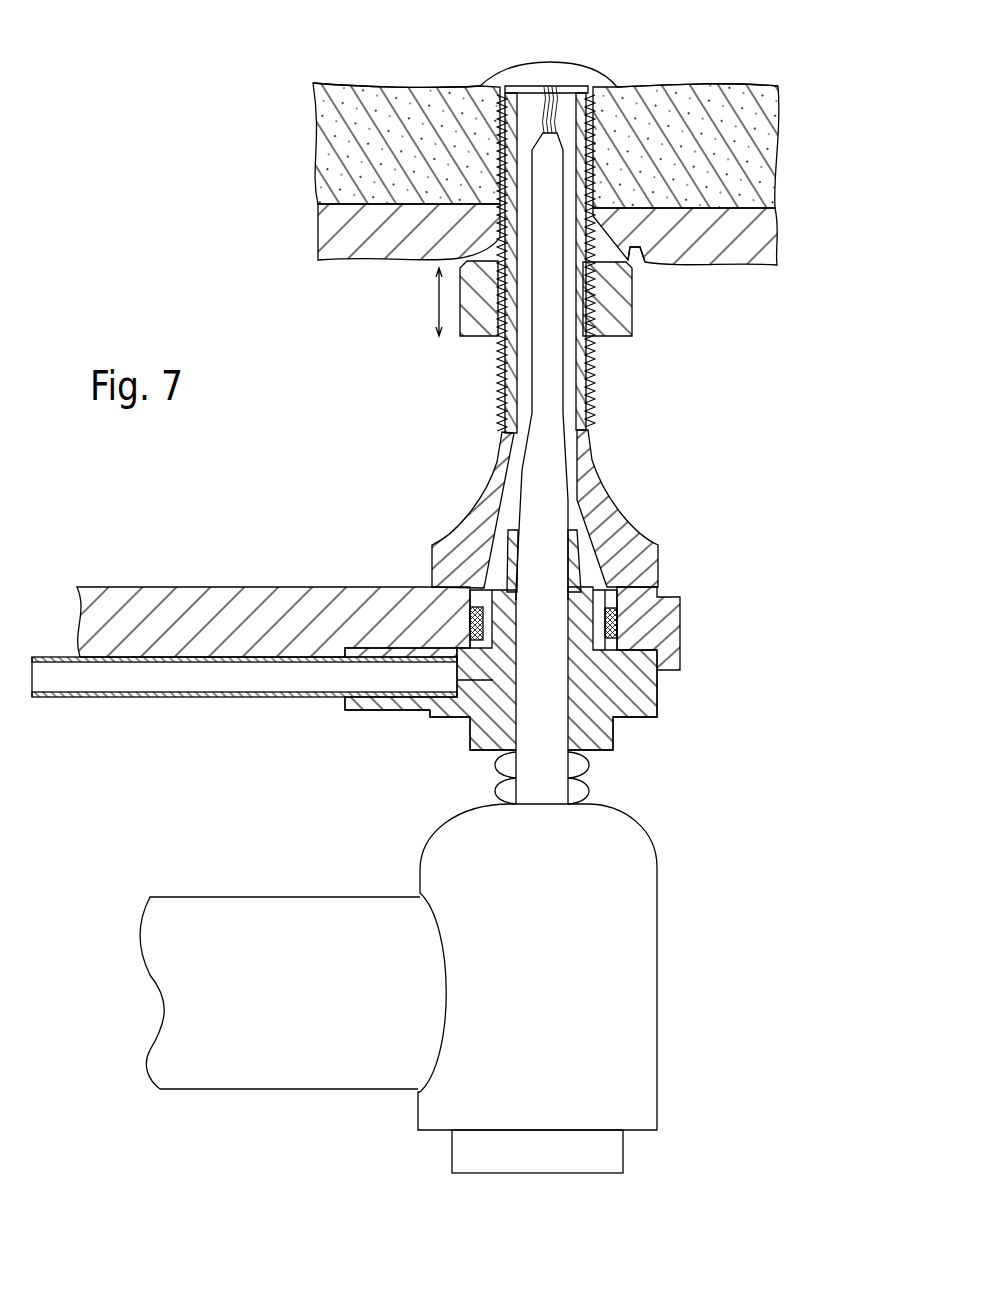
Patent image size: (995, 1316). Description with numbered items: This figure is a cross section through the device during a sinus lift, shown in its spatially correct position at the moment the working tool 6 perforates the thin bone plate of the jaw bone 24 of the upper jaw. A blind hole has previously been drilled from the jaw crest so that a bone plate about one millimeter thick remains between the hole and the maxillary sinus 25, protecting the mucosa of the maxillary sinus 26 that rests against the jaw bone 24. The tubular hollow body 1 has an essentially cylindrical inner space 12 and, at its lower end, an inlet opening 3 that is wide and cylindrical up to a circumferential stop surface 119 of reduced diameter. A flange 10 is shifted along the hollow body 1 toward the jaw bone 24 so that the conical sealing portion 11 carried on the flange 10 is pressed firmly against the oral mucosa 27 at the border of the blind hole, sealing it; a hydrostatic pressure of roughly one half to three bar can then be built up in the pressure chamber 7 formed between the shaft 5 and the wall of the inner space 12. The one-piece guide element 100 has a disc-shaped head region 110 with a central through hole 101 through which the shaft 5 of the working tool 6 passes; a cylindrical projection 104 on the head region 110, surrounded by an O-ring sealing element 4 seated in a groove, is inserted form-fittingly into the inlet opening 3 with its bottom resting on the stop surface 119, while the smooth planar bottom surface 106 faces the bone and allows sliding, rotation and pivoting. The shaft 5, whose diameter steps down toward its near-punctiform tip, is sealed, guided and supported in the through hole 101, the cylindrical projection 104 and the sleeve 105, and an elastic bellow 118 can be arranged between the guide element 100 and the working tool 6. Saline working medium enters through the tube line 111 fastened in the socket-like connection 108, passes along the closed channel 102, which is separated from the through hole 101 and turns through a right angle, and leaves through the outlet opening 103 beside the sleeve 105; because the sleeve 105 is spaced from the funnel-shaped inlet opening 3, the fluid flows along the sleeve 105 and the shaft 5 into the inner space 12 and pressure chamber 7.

The hollow body 1 is at (500, 403).
The inlet opening 3 is at (497, 553).
The sealing element 4 is at (617, 618).
The shaft 5 is at (547, 432).
The working tool 6 is at (602, 1000).
The pressure chamber 7 is at (570, 373).
The flange 10 is at (633, 303).
The conical sealing portion 11 is at (643, 257).
The inner space 12 is at (569, 414).
The jaw bone 24 is at (370, 152).
The maxillary sinus 25 is at (372, 43).
The mucosa of the maxillary sinus 26 is at (548, 58).
The oral mucosa 27 is at (370, 228).
The guide element 100 is at (700, 773).
The through hole 101 is at (508, 753).
The channel 102 is at (463, 727).
The outlet opening 103 is at (487, 590).
The cylindrical projection 104 is at (605, 600).
The sleeve 105 is at (622, 528).
The bottom surface 106 is at (597, 587).
The connection 108 is at (340, 703).
The head region 110 is at (657, 717).
The tube line 111 is at (88, 672).
The elastic bellow 118 is at (578, 770).
The stop surface 119 is at (613, 587).